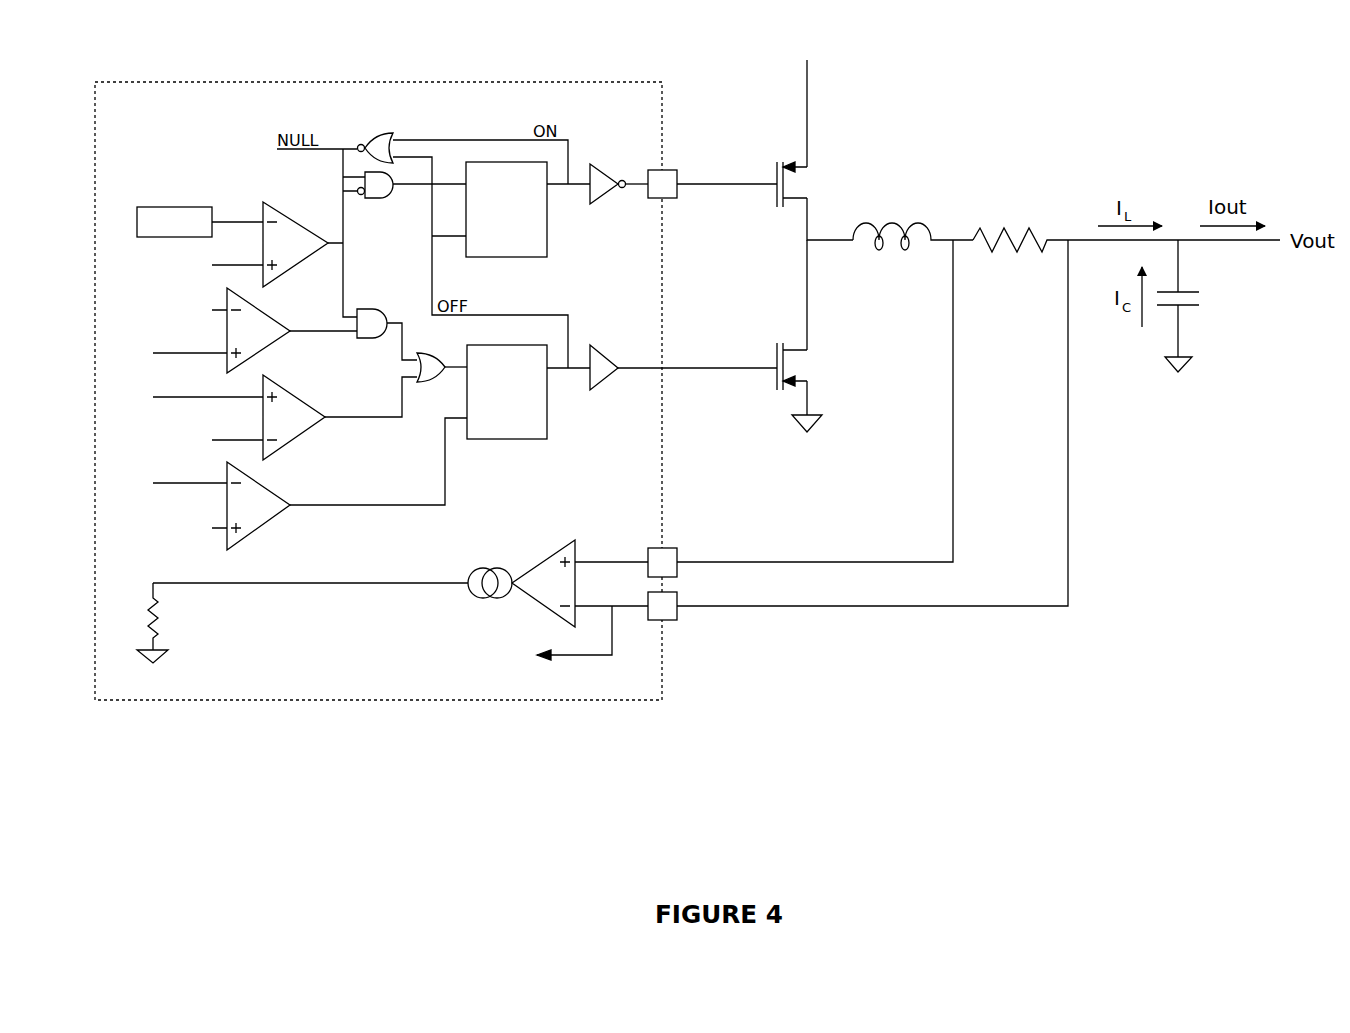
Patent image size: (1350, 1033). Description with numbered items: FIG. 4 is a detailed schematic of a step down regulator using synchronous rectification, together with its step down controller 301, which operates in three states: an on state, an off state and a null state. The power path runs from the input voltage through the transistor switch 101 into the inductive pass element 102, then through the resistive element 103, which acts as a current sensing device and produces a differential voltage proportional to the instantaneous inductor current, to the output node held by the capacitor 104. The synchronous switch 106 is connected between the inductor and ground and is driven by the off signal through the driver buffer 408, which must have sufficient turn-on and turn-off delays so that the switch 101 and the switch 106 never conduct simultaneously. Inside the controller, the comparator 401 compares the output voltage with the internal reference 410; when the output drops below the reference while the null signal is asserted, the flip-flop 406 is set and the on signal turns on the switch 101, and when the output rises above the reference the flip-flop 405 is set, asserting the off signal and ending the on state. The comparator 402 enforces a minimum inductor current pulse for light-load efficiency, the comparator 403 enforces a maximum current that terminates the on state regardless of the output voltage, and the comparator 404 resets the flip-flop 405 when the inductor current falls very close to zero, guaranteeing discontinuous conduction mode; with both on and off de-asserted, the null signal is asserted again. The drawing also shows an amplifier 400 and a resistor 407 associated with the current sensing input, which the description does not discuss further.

The step down controller 301 is at (305, 82).
The internal reference 410 is at (172, 205).
The comparator 401 is at (295, 215).
The comparator 402 is at (283, 320).
The comparator 403 is at (312, 402).
The comparator 404 is at (288, 493).
The flip-flop 405 is at (508, 447).
The flip-flop 406 is at (495, 265).
The driver buffer 408 is at (583, 395).
The amplifier 400 is at (538, 560).
The resistor R1 407 is at (162, 617).
The transistor switch 101 is at (810, 178).
The synchronous switch 106 is at (808, 362).
The inductive pass element 102 is at (873, 225).
The resistive element 103 is at (980, 225).
The capacitor 104 is at (1212, 308).